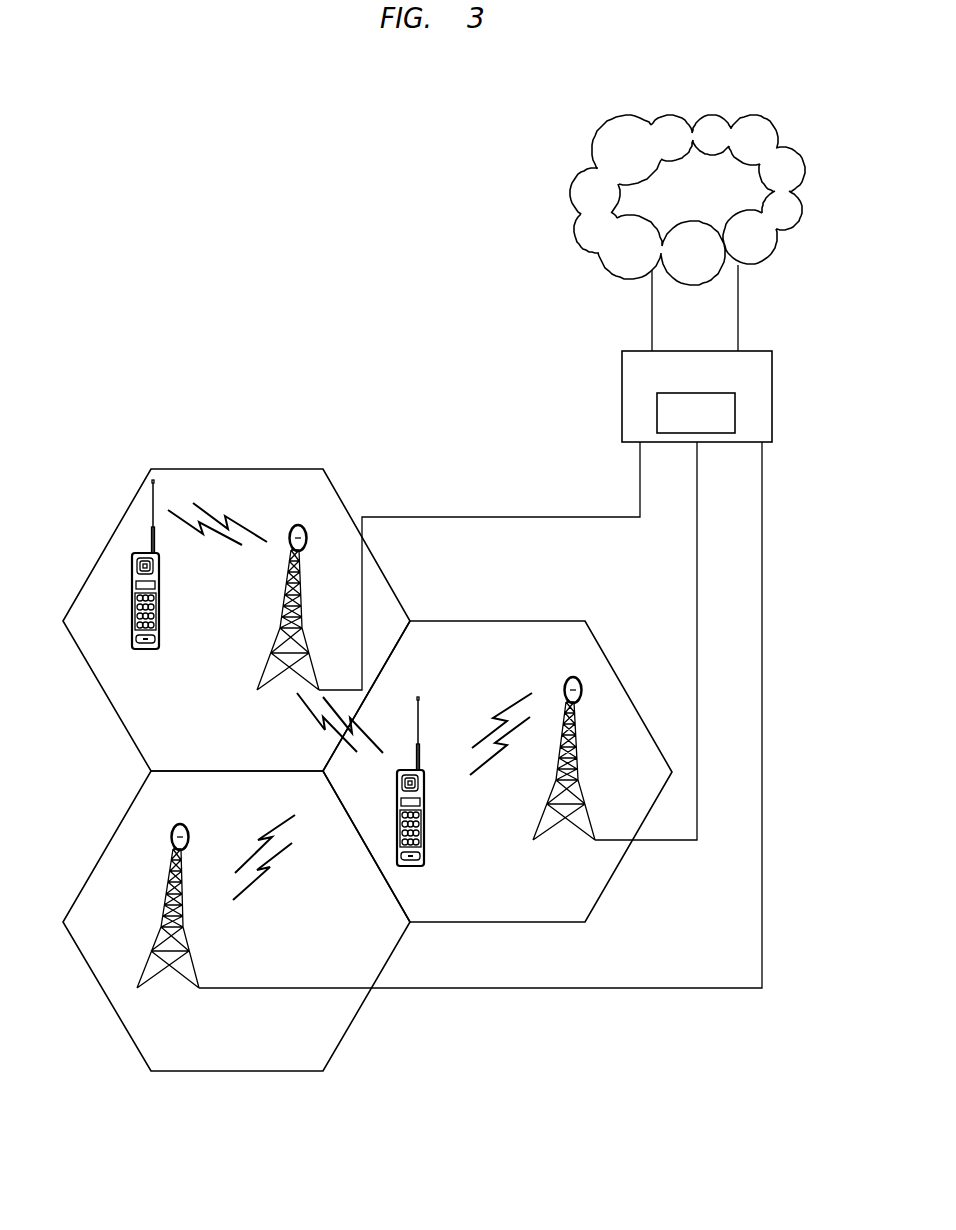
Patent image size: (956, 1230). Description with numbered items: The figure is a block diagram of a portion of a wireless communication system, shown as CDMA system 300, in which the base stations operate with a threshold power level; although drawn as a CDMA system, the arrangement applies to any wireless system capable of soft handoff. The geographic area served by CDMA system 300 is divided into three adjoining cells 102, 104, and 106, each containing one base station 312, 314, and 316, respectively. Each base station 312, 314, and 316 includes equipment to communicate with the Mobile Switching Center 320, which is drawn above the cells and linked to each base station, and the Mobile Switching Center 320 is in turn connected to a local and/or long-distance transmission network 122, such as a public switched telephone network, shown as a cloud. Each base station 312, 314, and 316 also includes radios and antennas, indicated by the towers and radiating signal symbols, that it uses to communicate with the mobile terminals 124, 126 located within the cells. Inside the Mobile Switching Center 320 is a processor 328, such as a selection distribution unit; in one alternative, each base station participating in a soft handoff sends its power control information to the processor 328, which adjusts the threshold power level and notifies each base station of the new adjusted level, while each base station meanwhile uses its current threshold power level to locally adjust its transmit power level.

The CDMA system 300 is at (727, 93).
The transmission network 122 is at (572, 203).
The Mobile Switching Center 320 is at (622, 390).
The processor 328 is at (737, 415).
The cell 102 is at (248, 468).
The cell 104 is at (498, 620).
The cell 106 is at (238, 1072).
The base station 312 is at (293, 523).
The base station 314 is at (569, 676).
The base station 316 is at (142, 965).
The mobile terminal 124 is at (132, 620).
The mobile terminal 126 is at (424, 796).